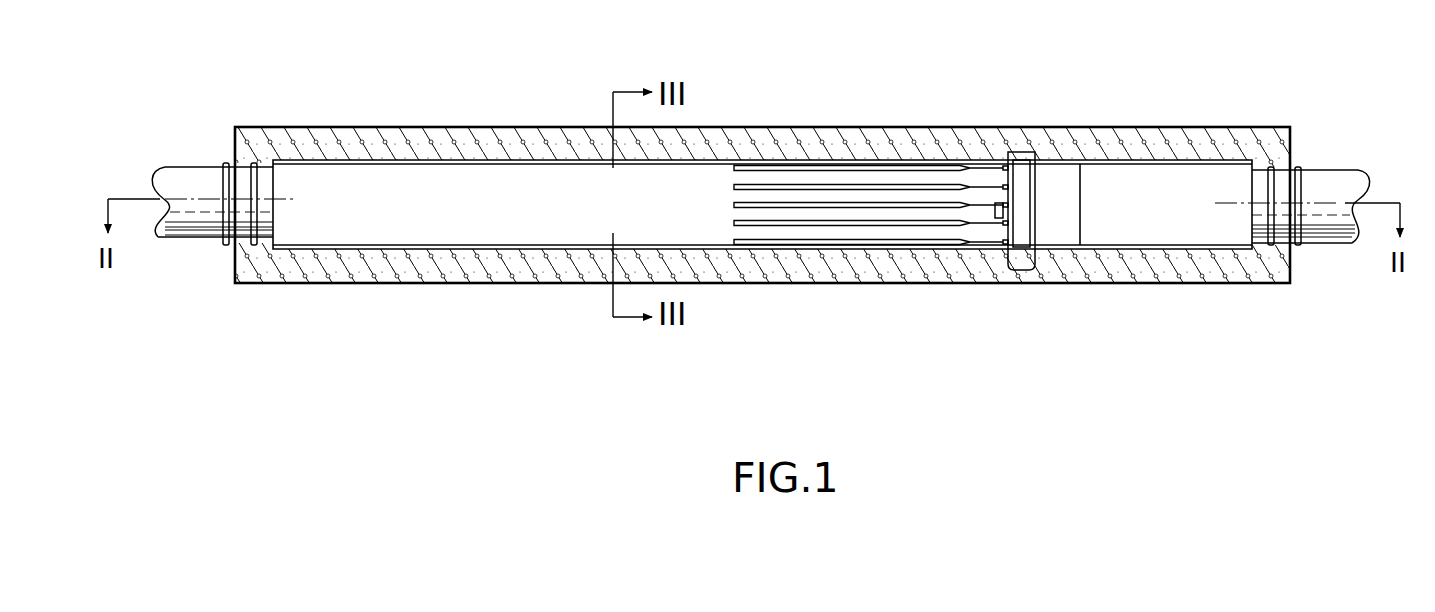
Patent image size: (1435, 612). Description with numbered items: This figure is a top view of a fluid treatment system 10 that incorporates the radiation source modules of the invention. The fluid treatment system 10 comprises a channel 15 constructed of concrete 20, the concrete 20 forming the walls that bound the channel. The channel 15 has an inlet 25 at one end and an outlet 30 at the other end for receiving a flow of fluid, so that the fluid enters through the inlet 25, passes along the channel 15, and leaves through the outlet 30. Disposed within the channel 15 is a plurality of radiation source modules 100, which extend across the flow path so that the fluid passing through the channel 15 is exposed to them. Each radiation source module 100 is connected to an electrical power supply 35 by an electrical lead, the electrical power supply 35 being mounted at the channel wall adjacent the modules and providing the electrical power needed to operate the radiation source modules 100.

The fluid treatment system 10 is at (1045, 310).
The channel 15 is at (455, 218).
The concrete 20 is at (1208, 270).
The inlet 25 is at (203, 222).
The outlet 30 is at (1317, 227).
The electrical power supply 35 is at (1023, 175).
The radiation source module 100 is at (890, 168).